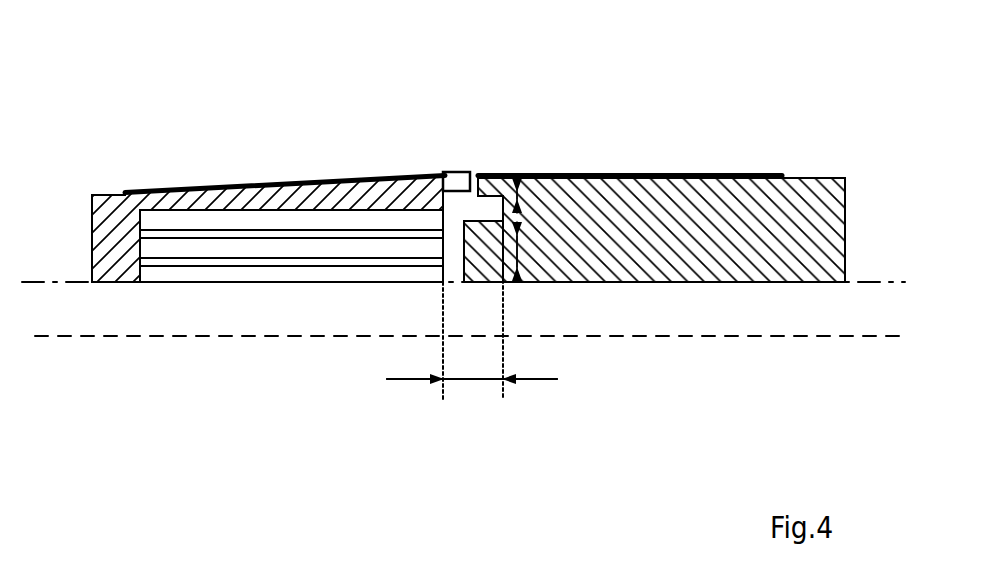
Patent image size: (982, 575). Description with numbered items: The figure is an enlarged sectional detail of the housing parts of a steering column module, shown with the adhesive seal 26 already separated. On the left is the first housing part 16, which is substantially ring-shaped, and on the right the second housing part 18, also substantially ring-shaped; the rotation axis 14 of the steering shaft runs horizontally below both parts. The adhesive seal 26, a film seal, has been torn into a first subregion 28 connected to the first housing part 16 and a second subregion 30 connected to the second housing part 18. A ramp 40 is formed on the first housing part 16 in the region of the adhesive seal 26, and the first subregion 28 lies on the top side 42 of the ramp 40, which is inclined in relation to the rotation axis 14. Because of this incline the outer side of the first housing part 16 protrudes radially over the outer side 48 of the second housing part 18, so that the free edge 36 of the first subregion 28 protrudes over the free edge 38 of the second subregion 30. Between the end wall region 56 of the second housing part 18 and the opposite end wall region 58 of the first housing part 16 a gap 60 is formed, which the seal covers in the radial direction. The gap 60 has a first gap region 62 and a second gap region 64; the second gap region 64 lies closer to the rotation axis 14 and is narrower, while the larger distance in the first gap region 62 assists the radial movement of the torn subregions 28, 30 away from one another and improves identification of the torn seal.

The rotation axis 14 is at (250, 338).
The first housing part 16 is at (100, 235).
The second housing part 18 is at (846, 231).
The adhesive seal 26 is at (452, 165).
The first subregion 28 is at (328, 178).
The second subregion 30 is at (663, 173).
The free edge 36 is at (475, 183).
The free edge 38 is at (493, 177).
The ramp 40 is at (390, 188).
The top side 42 is at (264, 186).
The outer side 48 is at (813, 176).
The end wall region 56 is at (498, 222).
The end wall region 58 is at (447, 200).
The gap 60 is at (470, 380).
The first gap region 62 is at (520, 200).
The second gap region 64 is at (530, 255).